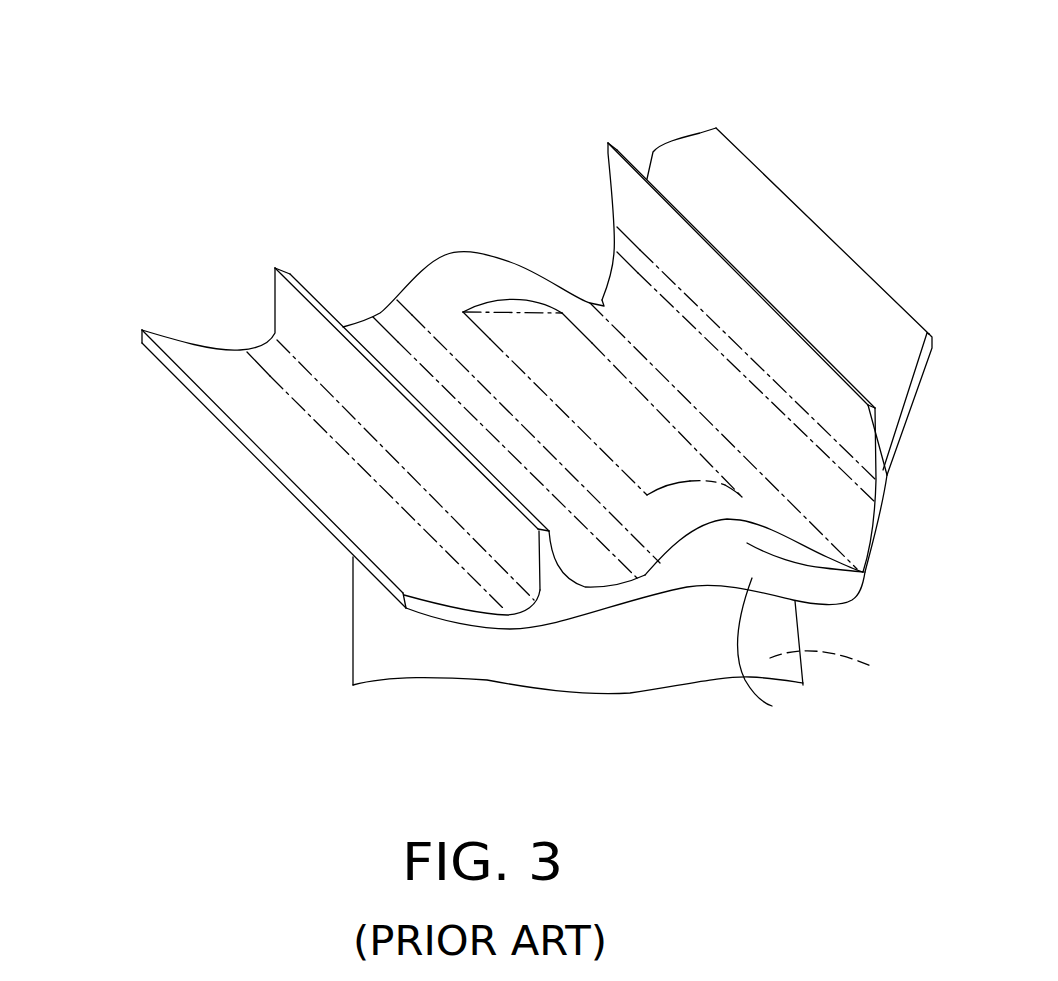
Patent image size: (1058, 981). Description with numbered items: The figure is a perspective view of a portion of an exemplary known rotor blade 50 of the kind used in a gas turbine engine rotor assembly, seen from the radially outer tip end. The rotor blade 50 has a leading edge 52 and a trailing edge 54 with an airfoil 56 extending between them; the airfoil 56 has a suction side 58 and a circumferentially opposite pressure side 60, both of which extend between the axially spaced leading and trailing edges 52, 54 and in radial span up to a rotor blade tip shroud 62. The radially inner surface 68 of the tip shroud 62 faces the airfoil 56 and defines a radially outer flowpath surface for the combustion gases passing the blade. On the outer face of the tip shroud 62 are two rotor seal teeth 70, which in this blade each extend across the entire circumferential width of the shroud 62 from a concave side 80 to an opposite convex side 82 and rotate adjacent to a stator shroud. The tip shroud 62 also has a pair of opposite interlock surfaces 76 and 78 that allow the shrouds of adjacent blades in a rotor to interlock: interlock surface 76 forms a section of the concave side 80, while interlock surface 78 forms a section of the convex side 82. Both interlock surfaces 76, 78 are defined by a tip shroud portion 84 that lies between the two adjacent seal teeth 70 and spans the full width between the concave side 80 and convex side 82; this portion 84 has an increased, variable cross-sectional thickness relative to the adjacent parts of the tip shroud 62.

The rotor blade 50 is at (810, 96).
The leading edge 52 is at (353, 613).
The trailing edge 54 is at (798, 630).
The airfoil 56 is at (593, 710).
The suction side 58 is at (453, 663).
The pressure side 60 is at (839, 669).
The rotor blade tip shroud 62 is at (128, 326).
The radially inner surface 68 is at (300, 452).
The rotor seal teeth 70 is at (283, 268).
The interlock surface 76 is at (458, 268).
The interlock surface 78 is at (850, 581).
The concave side 80 is at (541, 254).
The convex side 82 is at (771, 651).
The tip shroud portion 84 is at (615, 371).